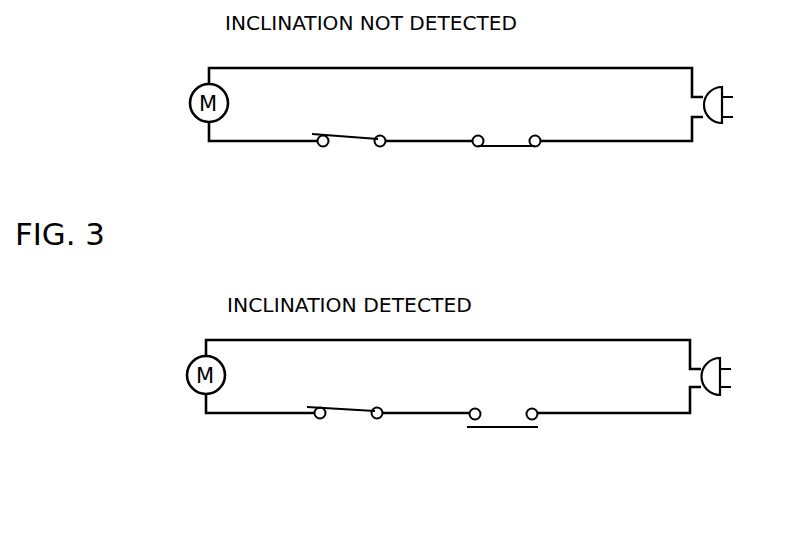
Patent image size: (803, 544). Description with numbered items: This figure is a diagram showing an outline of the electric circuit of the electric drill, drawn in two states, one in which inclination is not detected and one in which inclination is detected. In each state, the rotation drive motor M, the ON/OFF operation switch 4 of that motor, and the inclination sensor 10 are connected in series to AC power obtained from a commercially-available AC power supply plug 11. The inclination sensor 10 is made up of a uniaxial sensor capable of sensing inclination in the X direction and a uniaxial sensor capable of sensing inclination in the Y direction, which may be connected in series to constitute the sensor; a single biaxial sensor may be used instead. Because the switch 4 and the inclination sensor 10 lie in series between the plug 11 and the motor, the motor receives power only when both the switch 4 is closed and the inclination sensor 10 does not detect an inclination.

The ON/OFF operation switch 4 is at (352, 148).
The inclination sensor 10 is at (513, 155).
The AC power supply plug 11 is at (728, 80).